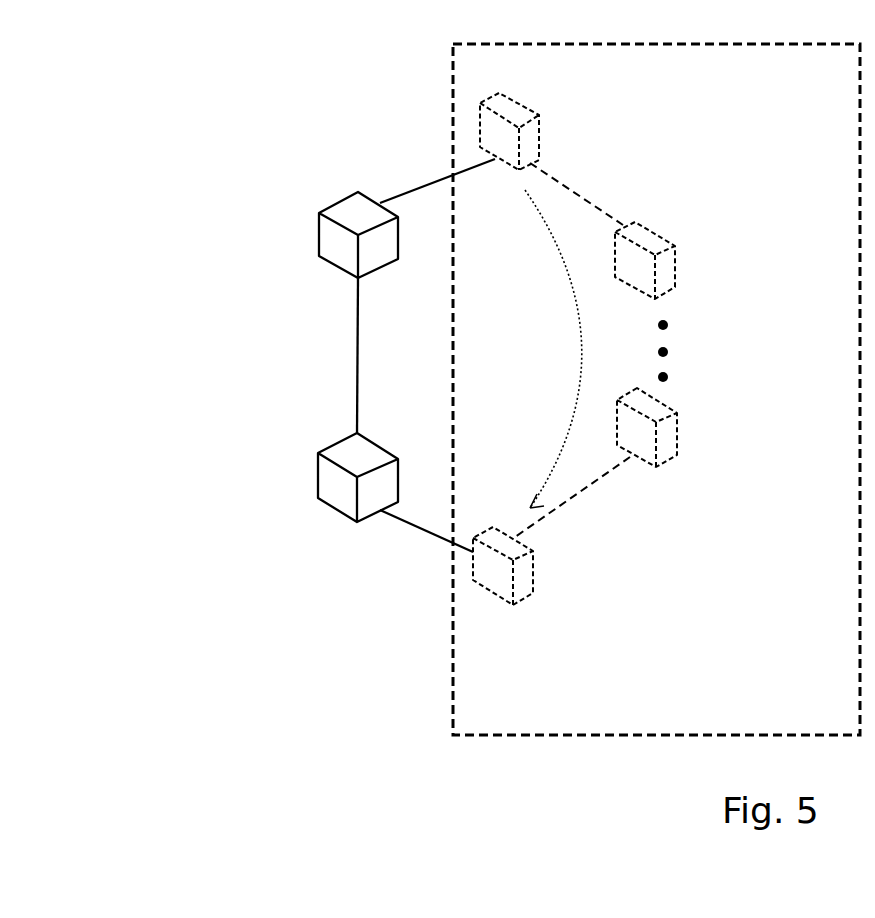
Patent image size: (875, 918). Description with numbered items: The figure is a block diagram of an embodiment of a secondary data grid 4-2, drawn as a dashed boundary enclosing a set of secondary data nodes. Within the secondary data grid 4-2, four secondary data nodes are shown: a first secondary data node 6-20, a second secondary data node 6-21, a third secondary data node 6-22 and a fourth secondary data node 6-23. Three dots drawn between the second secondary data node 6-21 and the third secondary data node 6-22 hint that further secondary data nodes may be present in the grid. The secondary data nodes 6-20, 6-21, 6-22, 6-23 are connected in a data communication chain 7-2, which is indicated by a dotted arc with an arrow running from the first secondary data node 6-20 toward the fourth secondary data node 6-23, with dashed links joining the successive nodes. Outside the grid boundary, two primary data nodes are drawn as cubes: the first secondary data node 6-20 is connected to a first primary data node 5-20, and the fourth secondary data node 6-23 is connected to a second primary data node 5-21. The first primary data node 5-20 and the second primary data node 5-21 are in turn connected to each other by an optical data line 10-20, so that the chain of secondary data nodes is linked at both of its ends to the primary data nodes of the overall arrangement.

The secondary data grid 4-2 is at (453, 687).
The first primary data node 5-20 is at (318, 236).
The second primary data node 5-21 is at (318, 478).
The optical data line 10-20 is at (357, 355).
The first secondary data node 6-20 is at (540, 138).
The second secondary data node 6-21 is at (675, 267).
The third secondary data node 6-22 is at (677, 433).
The fourth secondary data node 6-23 is at (535, 575).
The data communication chain 7-2 is at (580, 365).